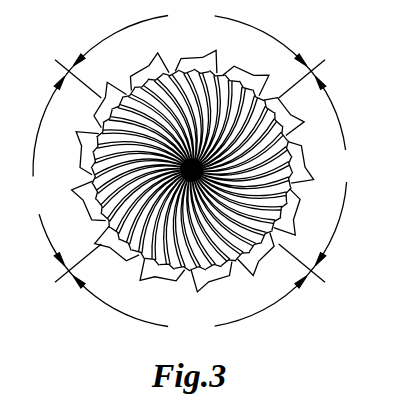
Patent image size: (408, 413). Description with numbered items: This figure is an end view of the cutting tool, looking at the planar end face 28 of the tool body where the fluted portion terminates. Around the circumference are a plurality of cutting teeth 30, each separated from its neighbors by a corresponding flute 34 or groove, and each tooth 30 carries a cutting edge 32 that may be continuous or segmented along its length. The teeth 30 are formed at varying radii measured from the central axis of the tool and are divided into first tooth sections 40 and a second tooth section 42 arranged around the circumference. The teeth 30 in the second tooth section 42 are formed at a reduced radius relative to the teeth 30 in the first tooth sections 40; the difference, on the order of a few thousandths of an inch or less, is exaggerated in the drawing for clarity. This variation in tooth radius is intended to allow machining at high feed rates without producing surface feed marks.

The planar end face 28 is at (254, 84).
The teeth 30 is at (78, 140).
The cutting edge 32 is at (237, 291).
The flutes 34 is at (186, 60).
The first tooth sections 40 is at (188, 171).
The second tooth section 42 is at (168, 16).